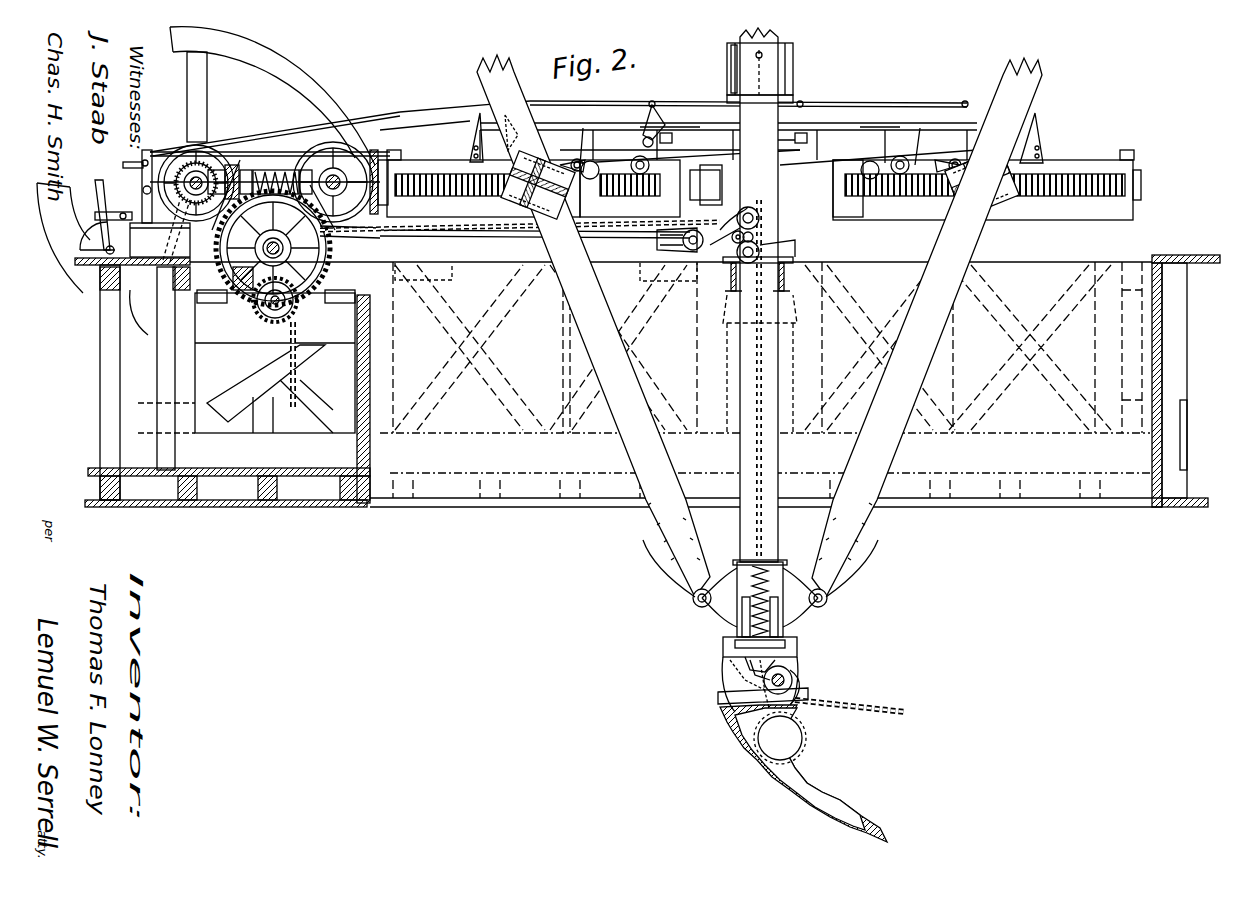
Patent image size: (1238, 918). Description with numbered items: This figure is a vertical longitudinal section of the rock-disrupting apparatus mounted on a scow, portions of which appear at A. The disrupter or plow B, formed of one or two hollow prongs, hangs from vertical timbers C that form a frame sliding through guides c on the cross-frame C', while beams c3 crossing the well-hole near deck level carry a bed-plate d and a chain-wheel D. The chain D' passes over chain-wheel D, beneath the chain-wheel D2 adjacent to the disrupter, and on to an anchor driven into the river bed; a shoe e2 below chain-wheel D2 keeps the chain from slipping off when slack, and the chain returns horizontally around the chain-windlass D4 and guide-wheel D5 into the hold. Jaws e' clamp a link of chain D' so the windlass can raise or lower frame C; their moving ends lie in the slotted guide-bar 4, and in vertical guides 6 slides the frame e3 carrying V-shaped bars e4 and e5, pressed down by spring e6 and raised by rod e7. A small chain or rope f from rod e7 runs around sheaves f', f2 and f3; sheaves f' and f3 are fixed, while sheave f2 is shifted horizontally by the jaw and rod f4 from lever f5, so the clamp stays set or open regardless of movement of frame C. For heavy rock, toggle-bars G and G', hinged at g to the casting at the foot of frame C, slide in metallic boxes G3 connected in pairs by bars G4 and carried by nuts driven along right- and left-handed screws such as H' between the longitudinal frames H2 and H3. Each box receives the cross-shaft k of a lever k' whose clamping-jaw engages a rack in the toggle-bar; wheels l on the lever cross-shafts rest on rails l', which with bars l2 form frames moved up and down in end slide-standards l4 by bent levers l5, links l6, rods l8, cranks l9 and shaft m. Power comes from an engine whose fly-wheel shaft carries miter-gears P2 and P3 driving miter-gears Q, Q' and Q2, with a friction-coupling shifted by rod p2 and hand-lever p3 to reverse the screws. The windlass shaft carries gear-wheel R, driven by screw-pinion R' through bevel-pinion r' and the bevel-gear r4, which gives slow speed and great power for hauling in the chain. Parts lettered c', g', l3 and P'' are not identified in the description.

The scow A is at (647, 381).
The disrupter or plow B is at (820, 760).
The vertical timbers C is at (767, 295).
The cross-frame C' is at (783, 73).
The guides c is at (753, 72).
The sleeve bar c' is at (721, 69).
The beams c3 is at (784, 278).
The chain-wheel D is at (770, 233).
The chain D' is at (603, 455).
The chain-wheel D2 is at (805, 665).
The chain-windlass D4 is at (335, 247).
The guide-wheel D5 is at (258, 310).
The bed-plate d is at (766, 245).
The jaws e' is at (786, 648).
The shoe e2 is at (745, 725).
The metal frame e3 is at (730, 640).
The V-shaped bar e4 is at (740, 660).
The V-shaped bar e5 is at (730, 688).
The spring e6 is at (780, 575).
The rod e7 is at (765, 560).
The small chain or wire rope f is at (715, 234).
The sheave f' is at (769, 252).
The sheave f2 is at (546, 274).
The sheave f3 is at (760, 215).
The jaw and rod f4 is at (625, 240).
The lever f5 is at (108, 212).
The toggle-bar G is at (594, 331).
The toggle-bar G' is at (925, 332).
The metallic box G3 is at (760, 190).
The bars G4 is at (1000, 205).
The hinge g is at (852, 579).
The arm g' is at (669, 583).
The screw H' is at (737, 189).
The longitudinal frame H2 is at (483, 181).
The longitudinal frame H3 is at (987, 182).
The cross-shaft k is at (760, 150).
The lever k' is at (753, 171).
The wheels l is at (728, 136).
The rails l' is at (768, 148).
The bars l2 is at (922, 128).
The lever l3 is at (652, 105).
The end slide-standards l4 is at (1045, 140).
The bell-cranks or bent levers l5 is at (795, 116).
The links l6 is at (821, 121).
The rods l8 is at (749, 94).
The cranks l9 is at (140, 178).
The shaft m is at (160, 240).
The miter-gear P2 is at (178, 150).
The miter-gear P3 is at (240, 160).
The arc P'' is at (141, 312).
The rod p2 is at (252, 165).
The hand-lever p3 is at (123, 163).
The miter-gear Q is at (340, 156).
The miter-gear Q' is at (340, 128).
The miter-gear Q2 is at (380, 145).
The gear-wheel R is at (262, 248).
The screw-pinion R' is at (270, 166).
The bevel-pinion r' is at (277, 136).
The bevel-gear r4 is at (232, 160).
The slotted guide-bar 4 is at (745, 668).
The vertical guides 6 is at (757, 613).